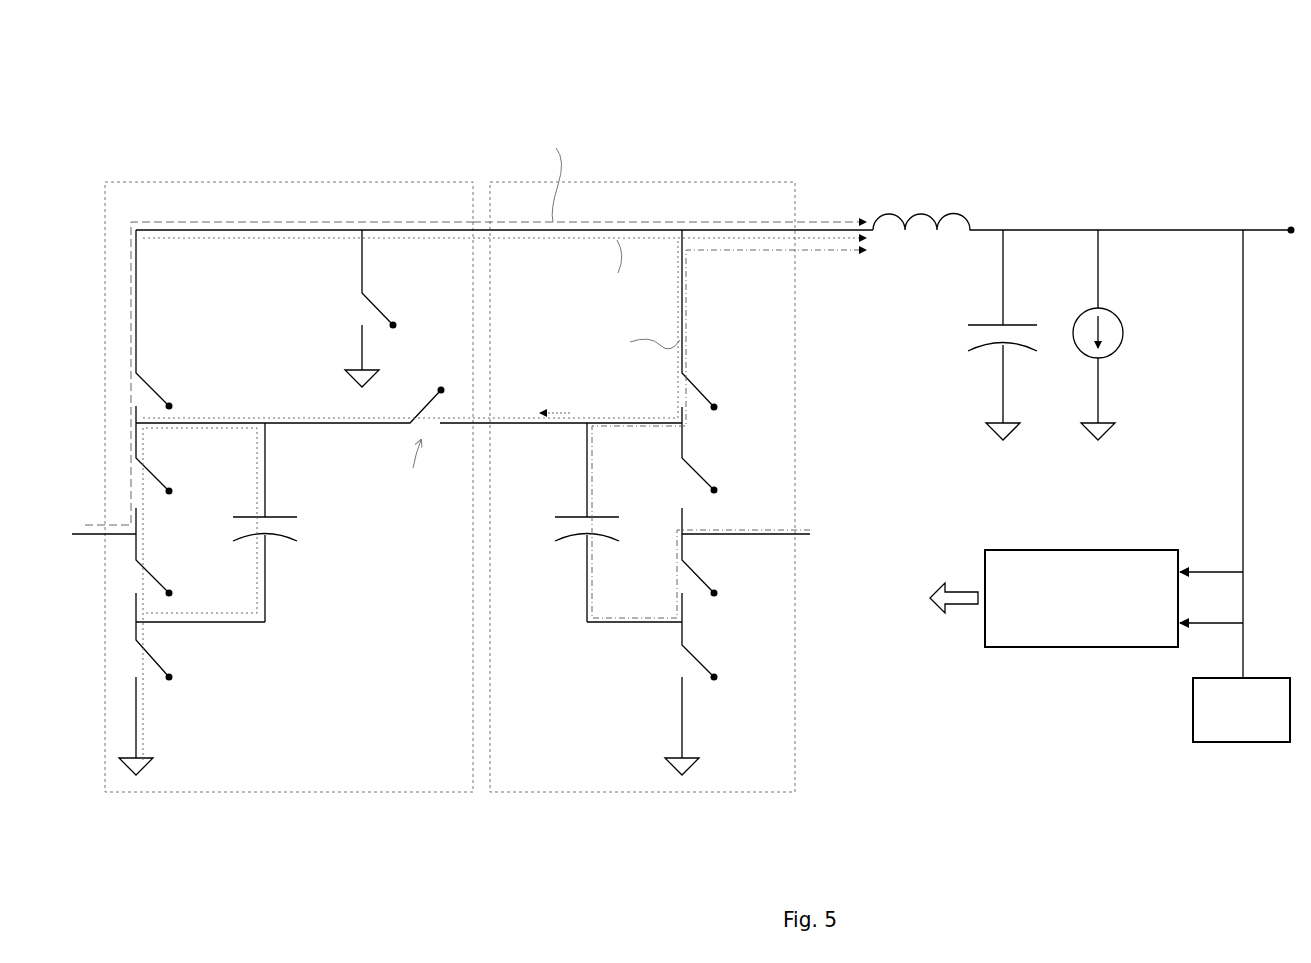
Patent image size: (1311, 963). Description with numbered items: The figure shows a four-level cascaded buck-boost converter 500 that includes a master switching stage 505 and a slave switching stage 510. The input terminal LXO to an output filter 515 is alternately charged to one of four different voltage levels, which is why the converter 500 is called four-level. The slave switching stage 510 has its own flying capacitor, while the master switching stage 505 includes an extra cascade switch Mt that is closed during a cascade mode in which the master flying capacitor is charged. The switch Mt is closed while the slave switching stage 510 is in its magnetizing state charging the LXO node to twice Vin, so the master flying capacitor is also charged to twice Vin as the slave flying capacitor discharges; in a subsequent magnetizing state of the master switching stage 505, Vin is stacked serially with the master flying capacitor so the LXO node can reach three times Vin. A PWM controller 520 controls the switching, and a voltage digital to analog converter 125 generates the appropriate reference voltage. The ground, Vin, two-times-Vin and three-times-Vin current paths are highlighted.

The four-level cascaded buck-boost converter 500 is at (678, 55).
The master switching stage 505 is at (182, 182).
The slave switching stage 510 is at (727, 182).
The output filter 515 is at (1013, 202).
The PWM controller 520 is at (1058, 550).
The VDAC 125 is at (1193, 738).